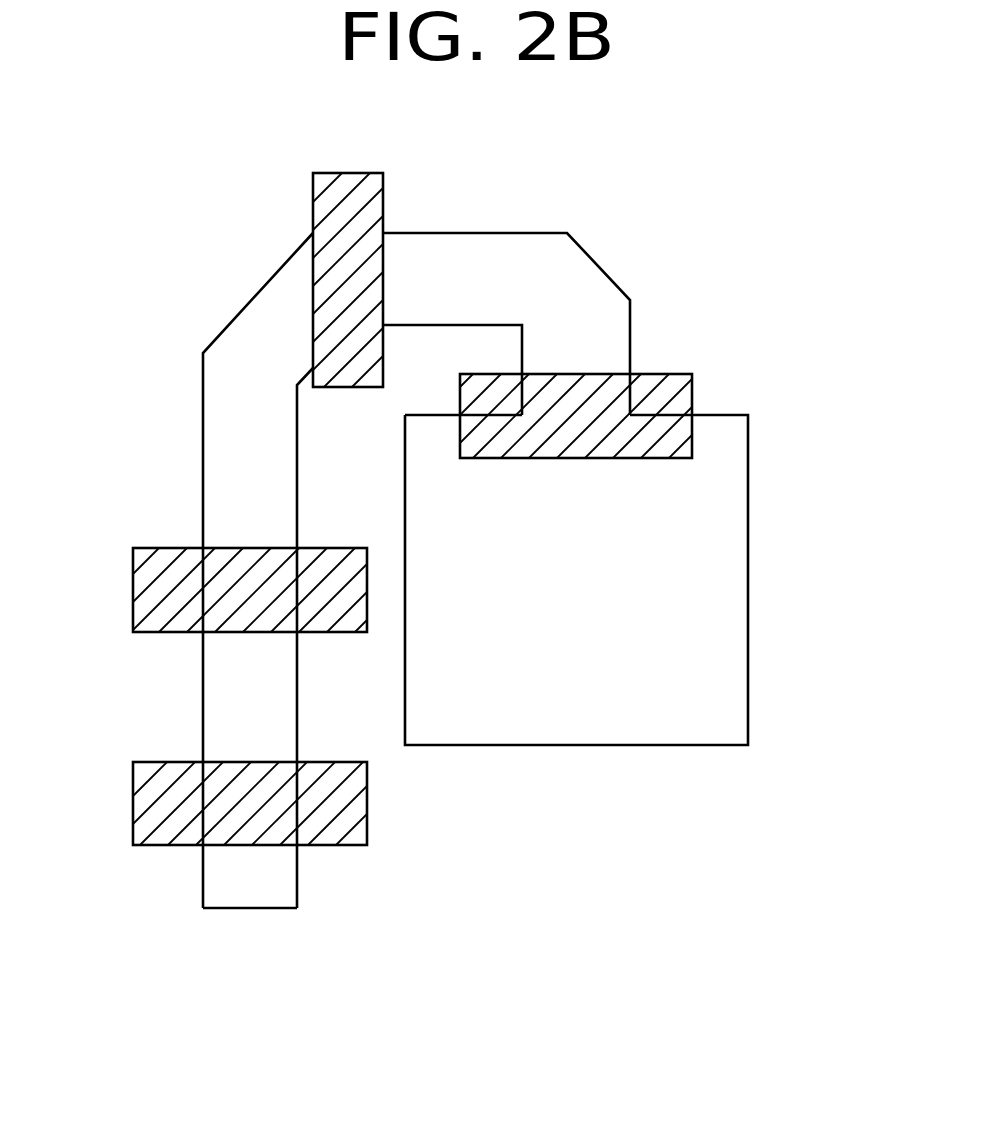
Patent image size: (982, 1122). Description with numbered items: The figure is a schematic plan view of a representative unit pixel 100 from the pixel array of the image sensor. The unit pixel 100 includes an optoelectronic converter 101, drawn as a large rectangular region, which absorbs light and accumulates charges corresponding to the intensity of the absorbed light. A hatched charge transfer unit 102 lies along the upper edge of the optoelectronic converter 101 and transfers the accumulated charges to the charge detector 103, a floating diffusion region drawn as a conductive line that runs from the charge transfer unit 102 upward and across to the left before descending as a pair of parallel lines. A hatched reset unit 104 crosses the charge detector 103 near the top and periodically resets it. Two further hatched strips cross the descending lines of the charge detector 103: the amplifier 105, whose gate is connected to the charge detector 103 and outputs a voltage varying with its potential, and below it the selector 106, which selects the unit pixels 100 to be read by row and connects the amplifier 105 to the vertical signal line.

The unit pixel 100 is at (728, 155).
The optoelectronic converter 101 is at (725, 578).
The charge transfer unit 102 is at (687, 395).
The charge detector 103 is at (583, 272).
The reset unit 104 is at (352, 180).
The amplifier 105 is at (147, 588).
The selector 106 is at (147, 808).